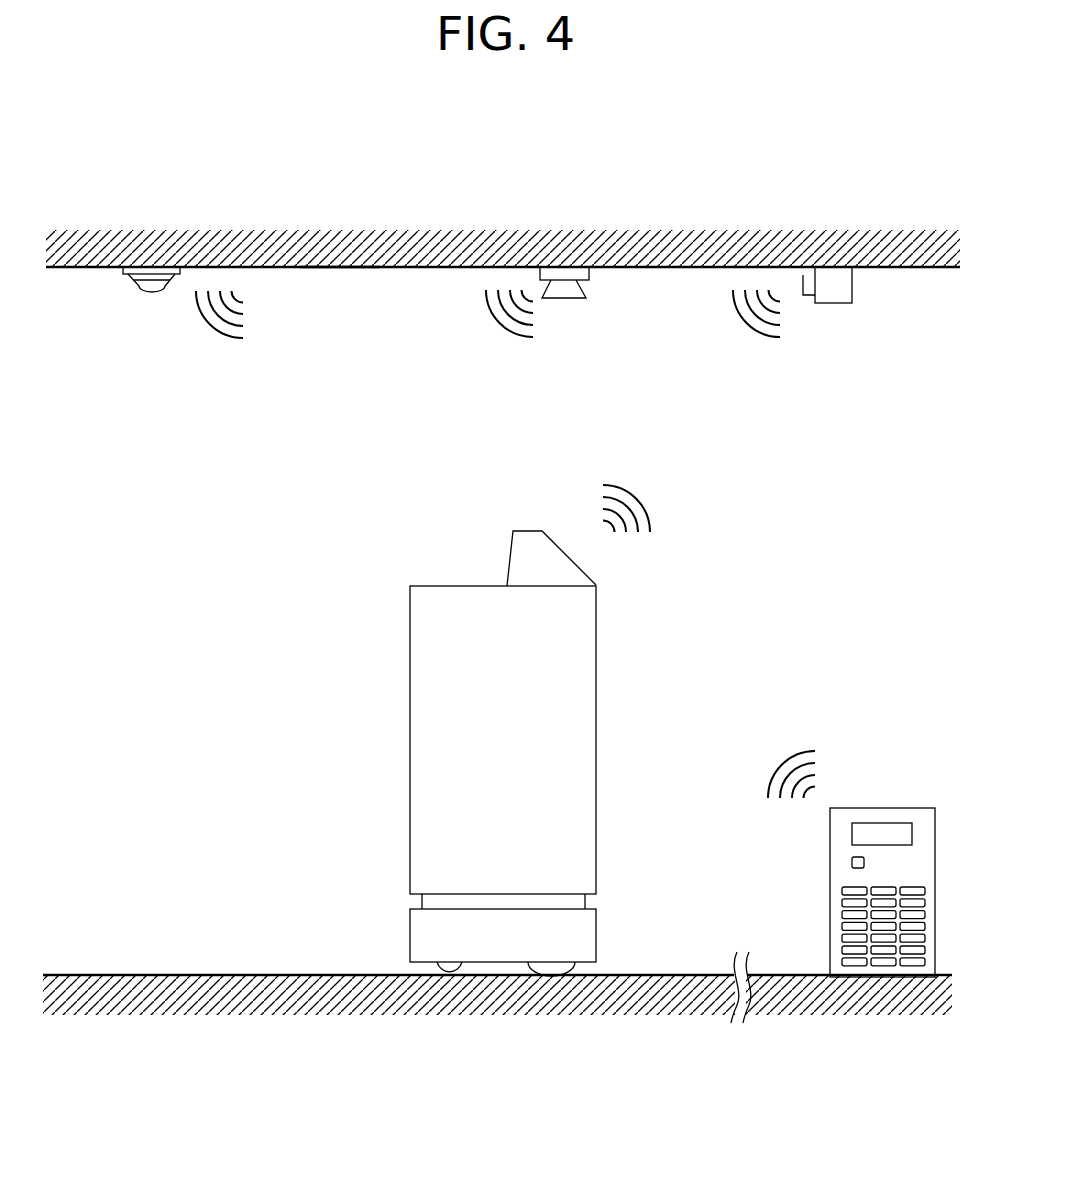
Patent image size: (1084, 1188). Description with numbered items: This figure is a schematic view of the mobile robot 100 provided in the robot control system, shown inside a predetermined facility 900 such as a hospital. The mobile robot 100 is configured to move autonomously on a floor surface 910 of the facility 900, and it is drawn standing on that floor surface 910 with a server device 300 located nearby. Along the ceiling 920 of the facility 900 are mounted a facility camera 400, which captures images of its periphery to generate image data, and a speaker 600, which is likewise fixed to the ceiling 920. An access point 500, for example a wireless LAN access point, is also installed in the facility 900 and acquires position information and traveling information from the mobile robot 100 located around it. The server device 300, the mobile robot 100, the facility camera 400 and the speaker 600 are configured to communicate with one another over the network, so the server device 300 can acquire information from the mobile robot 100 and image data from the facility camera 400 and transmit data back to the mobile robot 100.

The mobile robot 100 is at (665, 632).
The server device 300 is at (892, 808).
The facility camera 400 is at (133, 277).
The access point 500 is at (832, 303).
The speaker 600 is at (563, 298).
The predetermined facility 900 is at (257, 218).
The floor surface 910 is at (335, 975).
The ceiling 920 is at (337, 268).